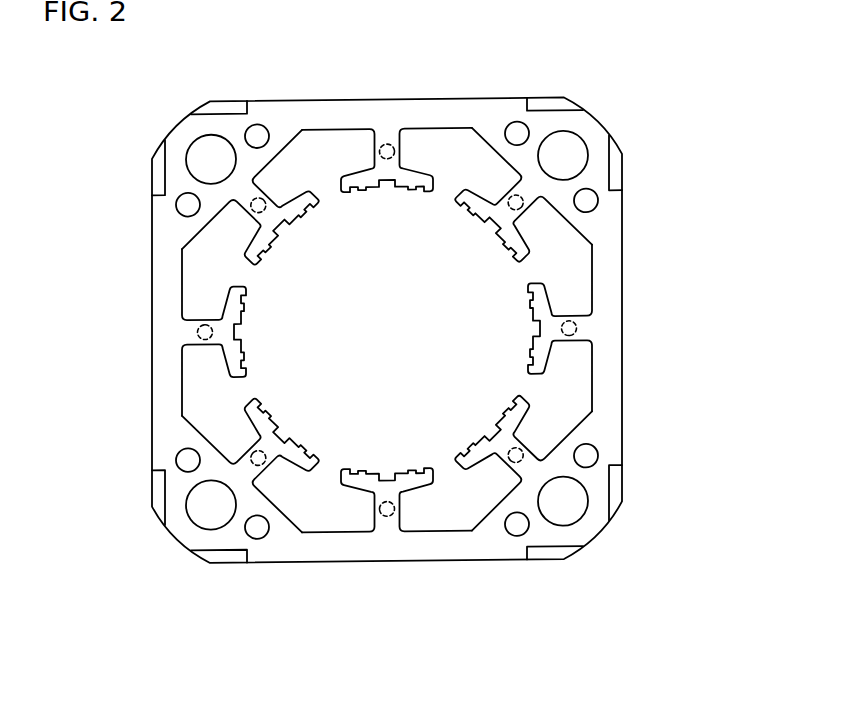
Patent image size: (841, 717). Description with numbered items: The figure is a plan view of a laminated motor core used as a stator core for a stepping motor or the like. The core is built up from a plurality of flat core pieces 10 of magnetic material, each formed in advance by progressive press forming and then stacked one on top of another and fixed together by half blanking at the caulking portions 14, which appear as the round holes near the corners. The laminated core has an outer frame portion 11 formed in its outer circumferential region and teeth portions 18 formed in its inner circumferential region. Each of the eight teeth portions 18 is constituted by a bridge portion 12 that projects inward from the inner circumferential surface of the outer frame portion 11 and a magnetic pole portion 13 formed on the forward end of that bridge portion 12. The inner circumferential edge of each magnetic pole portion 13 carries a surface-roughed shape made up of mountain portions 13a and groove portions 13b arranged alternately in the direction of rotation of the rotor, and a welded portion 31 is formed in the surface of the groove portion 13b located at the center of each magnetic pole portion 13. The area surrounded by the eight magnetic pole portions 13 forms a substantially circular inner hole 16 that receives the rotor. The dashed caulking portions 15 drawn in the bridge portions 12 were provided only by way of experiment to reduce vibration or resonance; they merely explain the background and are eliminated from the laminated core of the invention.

The core piece 10 is at (230, 113).
The outer frame portion 11 is at (442, 113).
The bridge portion 12 is at (523, 207).
The magnetic pole portion 13 is at (253, 246).
The mountain portion 13a is at (350, 474).
The groove portion 13b is at (381, 472).
The caulking portion 14 is at (257, 541).
The caulking portion 15 is at (387, 520).
The inner hole 16 is at (404, 343).
The teeth portion 18 is at (538, 237).
The welded portion 31 is at (388, 472).